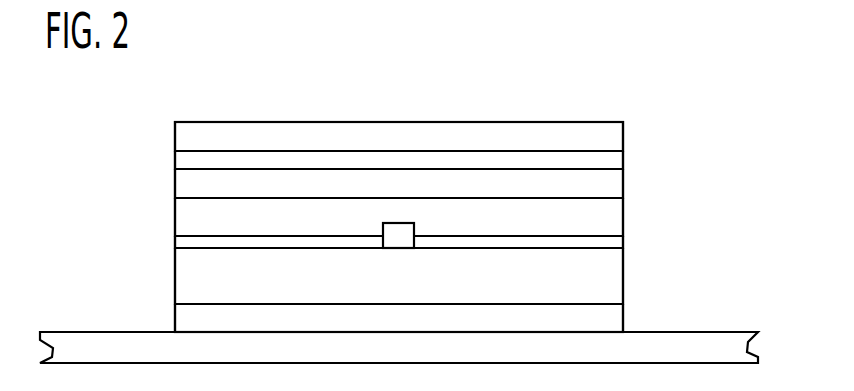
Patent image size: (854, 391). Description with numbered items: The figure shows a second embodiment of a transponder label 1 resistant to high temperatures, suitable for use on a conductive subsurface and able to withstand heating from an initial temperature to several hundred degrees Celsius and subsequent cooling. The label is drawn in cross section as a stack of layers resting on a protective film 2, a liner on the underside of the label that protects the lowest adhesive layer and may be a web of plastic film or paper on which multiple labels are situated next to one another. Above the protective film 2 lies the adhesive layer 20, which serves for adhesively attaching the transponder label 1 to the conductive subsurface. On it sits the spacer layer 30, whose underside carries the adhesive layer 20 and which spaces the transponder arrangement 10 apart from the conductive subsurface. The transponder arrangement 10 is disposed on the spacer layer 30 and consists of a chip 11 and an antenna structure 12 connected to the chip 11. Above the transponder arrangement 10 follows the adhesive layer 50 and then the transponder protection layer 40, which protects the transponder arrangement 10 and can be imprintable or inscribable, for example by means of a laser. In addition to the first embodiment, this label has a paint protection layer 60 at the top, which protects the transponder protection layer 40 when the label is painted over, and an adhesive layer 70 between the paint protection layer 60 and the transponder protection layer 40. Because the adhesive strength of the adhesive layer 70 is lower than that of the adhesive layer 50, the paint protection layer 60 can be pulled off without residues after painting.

The transponder label 1 is at (668, 74).
The protective film 2 is at (723, 343).
The transponder arrangement 10 is at (624, 242).
The chip 11 is at (398, 223).
The antenna structure 12 is at (181, 243).
The adhesive layer 20 is at (611, 314).
The spacer layer 30 is at (611, 281).
The transponder protection layer 40 is at (611, 187).
The adhesive layer 50 is at (183, 217).
The paint protection layer 60 is at (611, 139).
The adhesive layer 70 is at (183, 162).